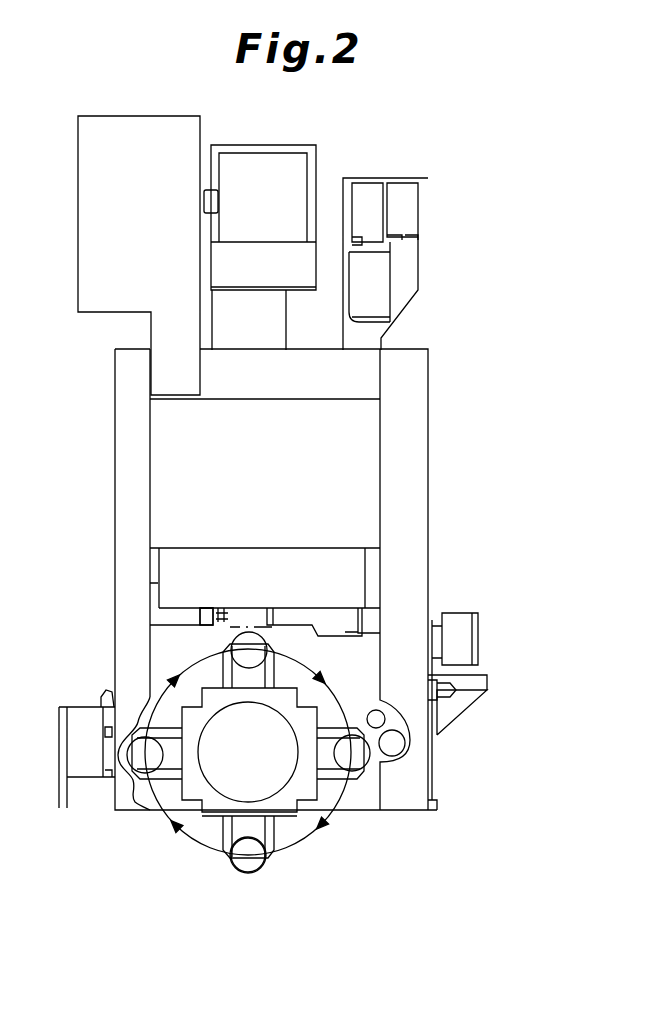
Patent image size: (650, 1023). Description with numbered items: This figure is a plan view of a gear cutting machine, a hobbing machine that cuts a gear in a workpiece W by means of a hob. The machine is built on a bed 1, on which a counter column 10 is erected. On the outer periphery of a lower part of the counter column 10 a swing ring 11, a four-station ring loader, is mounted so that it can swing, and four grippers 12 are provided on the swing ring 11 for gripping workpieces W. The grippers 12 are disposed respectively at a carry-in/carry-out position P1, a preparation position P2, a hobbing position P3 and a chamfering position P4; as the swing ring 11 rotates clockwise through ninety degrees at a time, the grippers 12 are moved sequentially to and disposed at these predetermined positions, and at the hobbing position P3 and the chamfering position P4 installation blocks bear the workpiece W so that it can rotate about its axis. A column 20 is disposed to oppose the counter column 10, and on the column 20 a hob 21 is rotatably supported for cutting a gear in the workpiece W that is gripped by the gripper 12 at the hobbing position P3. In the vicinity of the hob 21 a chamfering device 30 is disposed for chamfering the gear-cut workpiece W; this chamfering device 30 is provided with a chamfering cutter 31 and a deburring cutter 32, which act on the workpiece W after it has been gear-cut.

The bed 1 is at (127, 486).
The counter column 10 is at (233, 780).
The swing ring 11 is at (305, 788).
The gripper 12 is at (270, 857).
The column 20 is at (363, 497).
The hob 21 is at (205, 612).
The chamfering device 30 is at (508, 728).
The chamfering cutter 31 is at (395, 745).
The deburring cutter 32 is at (378, 716).
The workpiece W is at (252, 867).
The carry-in/carry-out position P1 is at (239, 870).
The preparation position P2 is at (143, 777).
The hobbing position P3 is at (221, 648).
The chamfering position P4 is at (367, 771).